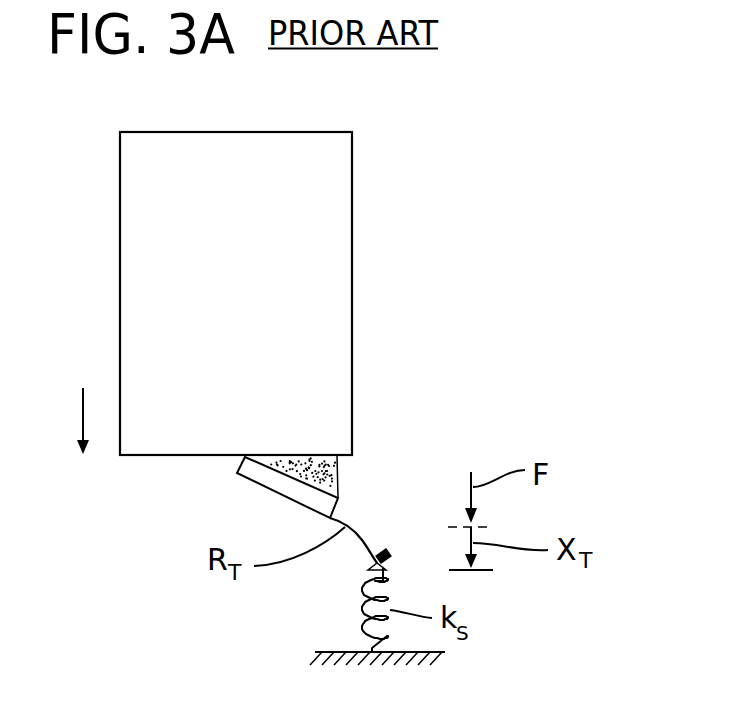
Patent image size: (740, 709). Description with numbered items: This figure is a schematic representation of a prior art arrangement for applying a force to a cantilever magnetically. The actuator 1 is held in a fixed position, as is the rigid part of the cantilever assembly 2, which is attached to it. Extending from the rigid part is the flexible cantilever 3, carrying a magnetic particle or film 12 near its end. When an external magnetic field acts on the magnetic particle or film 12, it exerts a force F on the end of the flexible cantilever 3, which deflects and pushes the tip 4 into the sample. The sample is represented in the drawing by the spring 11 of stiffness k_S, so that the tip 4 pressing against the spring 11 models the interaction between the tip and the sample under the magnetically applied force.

The actuator 1 is at (130, 221).
The cantilever assembly 2 is at (253, 473).
The flexible cantilever 3 is at (358, 535).
The tip 4 is at (372, 570).
The magnetic particle or film 12 is at (390, 552).
The spring 11 is at (500, 612).